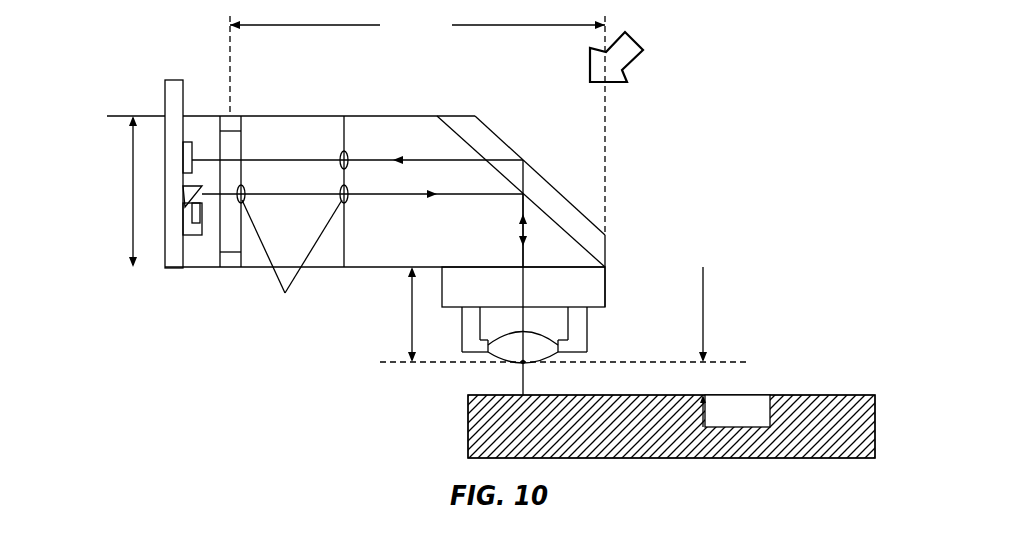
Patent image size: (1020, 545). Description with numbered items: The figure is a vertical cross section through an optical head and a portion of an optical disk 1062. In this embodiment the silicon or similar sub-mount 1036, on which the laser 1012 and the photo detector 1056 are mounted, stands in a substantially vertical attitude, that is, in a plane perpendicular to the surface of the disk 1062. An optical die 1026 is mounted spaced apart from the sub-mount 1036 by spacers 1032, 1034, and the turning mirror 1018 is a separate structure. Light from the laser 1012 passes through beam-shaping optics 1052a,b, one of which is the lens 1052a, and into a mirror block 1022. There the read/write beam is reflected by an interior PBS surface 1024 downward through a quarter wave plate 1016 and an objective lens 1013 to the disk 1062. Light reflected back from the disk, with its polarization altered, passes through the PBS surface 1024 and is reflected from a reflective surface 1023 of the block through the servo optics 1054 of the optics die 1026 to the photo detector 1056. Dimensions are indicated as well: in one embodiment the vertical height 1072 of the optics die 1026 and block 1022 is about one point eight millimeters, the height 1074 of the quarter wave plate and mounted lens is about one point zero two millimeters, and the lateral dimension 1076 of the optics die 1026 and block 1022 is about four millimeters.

The lateral dimension 1076 is at (417, 124).
The optical die 1026 is at (253, 115).
The sub-mount 1036 is at (200, 271).
The vertical height 1072 is at (131, 163).
The photo detector 1056 is at (185, 150).
The turning mirror 1018 is at (196, 201).
The laser 1012 is at (189, 222).
The spacer 1032 is at (231, 125).
The spacer 1034 is at (230, 260).
The beam-shaping optics 1052a is at (250, 160).
The servo optics 1054 is at (347, 157).
The beam-shaping optics 1052a,b is at (313, 255).
The mirror block 1022 is at (422, 120).
The reflective surface 1023 is at (503, 137).
The PBS surface 1024 is at (603, 196).
The quarter wave plate 1016 is at (610, 283).
The height 1074 is at (410, 318).
The objective lens 1013 is at (503, 363).
The disk 1062 is at (785, 394).